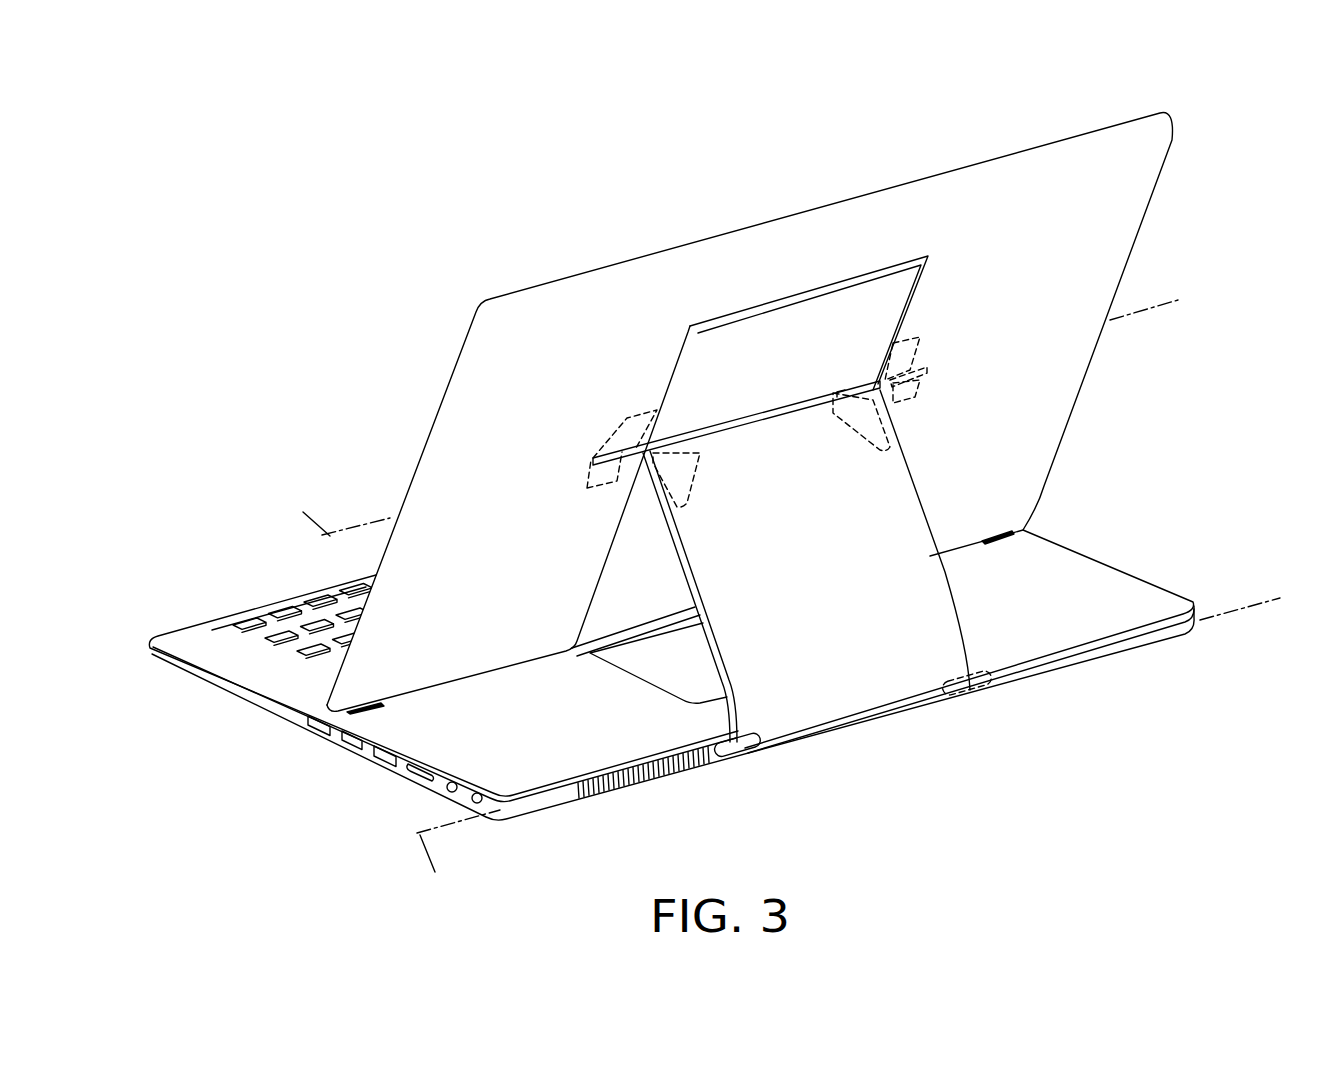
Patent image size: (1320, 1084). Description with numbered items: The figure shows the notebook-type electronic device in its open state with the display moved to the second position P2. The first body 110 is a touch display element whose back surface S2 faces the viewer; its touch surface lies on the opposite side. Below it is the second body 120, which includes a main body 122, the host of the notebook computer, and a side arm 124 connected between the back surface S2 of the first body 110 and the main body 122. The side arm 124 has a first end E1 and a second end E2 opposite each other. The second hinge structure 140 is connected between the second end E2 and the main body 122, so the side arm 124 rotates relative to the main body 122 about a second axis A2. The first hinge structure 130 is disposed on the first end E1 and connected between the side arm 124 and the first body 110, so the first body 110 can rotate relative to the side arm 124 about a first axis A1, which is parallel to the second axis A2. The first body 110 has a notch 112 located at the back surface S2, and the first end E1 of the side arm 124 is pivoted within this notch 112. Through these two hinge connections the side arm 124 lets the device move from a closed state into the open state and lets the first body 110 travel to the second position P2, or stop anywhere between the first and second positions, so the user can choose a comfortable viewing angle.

The first body 110 is at (446, 368).
The notch 112 is at (842, 318).
The second body 120 is at (1234, 778).
The main body 122 is at (1100, 605).
The side arm 124 is at (940, 607).
The first hinge structure 130 is at (587, 482).
The second hinge structure 140 is at (750, 756).
The first end E1 is at (699, 434).
The second end E2 is at (848, 740).
The back surface S2 is at (1082, 233).
The second position P2 is at (325, 690).
The first axis A1 is at (332, 514).
The second axis A2 is at (458, 859).